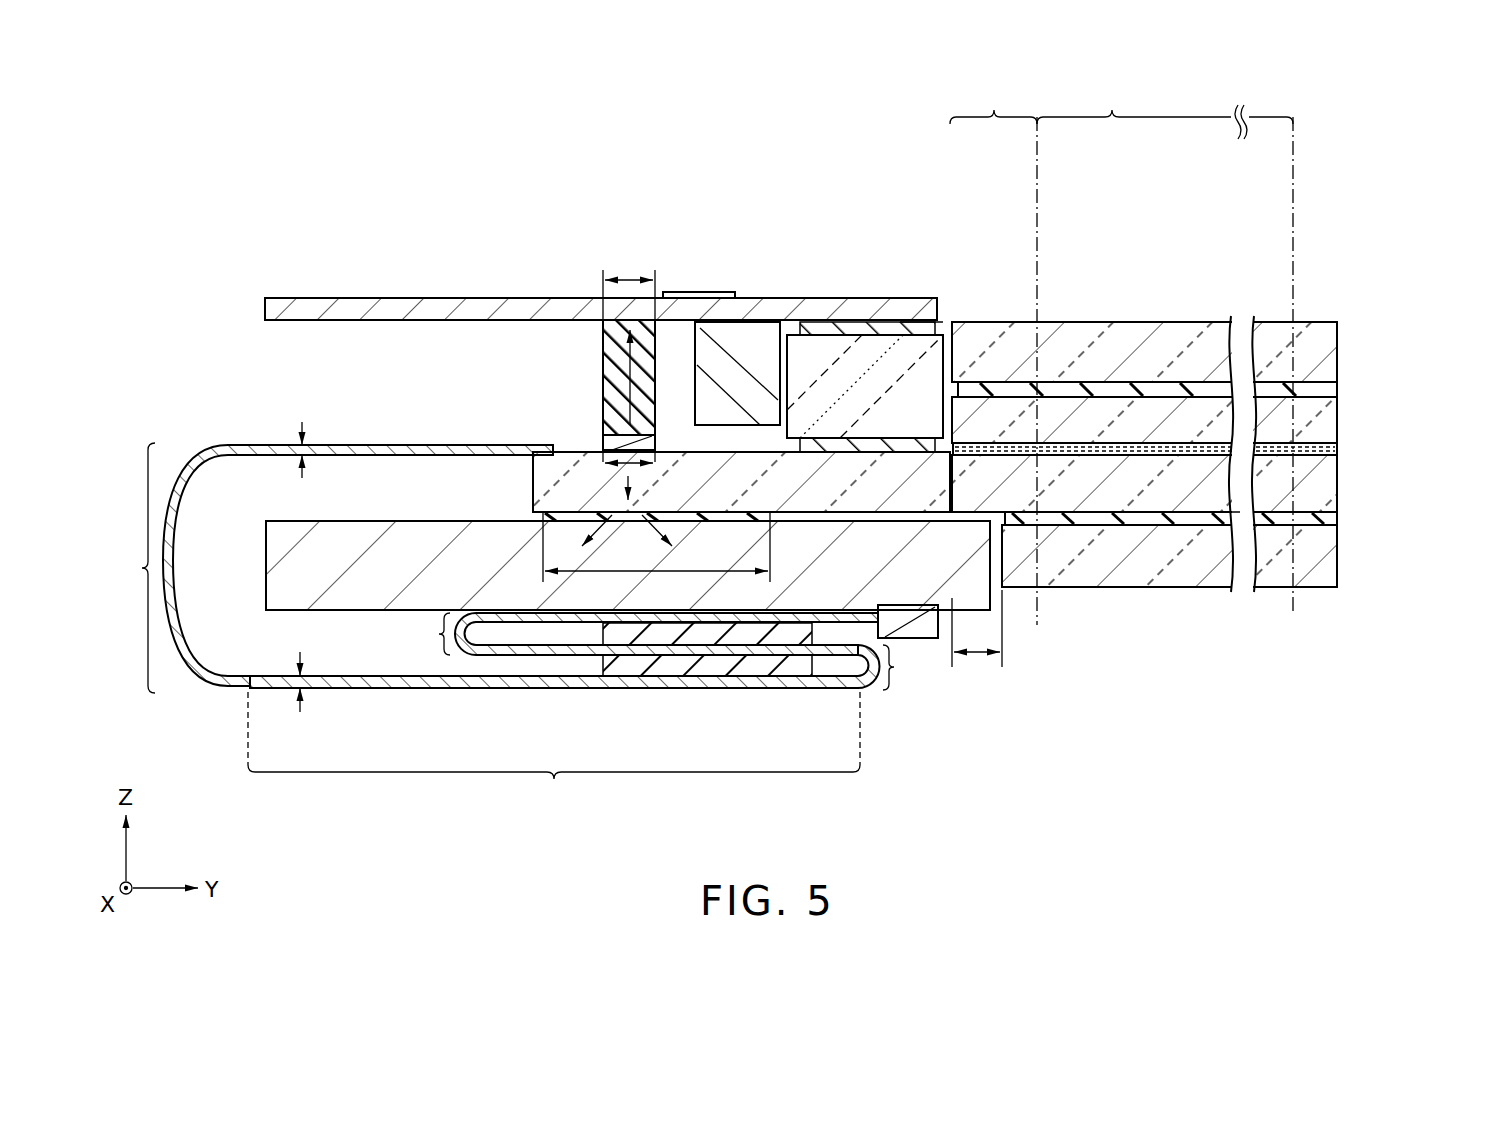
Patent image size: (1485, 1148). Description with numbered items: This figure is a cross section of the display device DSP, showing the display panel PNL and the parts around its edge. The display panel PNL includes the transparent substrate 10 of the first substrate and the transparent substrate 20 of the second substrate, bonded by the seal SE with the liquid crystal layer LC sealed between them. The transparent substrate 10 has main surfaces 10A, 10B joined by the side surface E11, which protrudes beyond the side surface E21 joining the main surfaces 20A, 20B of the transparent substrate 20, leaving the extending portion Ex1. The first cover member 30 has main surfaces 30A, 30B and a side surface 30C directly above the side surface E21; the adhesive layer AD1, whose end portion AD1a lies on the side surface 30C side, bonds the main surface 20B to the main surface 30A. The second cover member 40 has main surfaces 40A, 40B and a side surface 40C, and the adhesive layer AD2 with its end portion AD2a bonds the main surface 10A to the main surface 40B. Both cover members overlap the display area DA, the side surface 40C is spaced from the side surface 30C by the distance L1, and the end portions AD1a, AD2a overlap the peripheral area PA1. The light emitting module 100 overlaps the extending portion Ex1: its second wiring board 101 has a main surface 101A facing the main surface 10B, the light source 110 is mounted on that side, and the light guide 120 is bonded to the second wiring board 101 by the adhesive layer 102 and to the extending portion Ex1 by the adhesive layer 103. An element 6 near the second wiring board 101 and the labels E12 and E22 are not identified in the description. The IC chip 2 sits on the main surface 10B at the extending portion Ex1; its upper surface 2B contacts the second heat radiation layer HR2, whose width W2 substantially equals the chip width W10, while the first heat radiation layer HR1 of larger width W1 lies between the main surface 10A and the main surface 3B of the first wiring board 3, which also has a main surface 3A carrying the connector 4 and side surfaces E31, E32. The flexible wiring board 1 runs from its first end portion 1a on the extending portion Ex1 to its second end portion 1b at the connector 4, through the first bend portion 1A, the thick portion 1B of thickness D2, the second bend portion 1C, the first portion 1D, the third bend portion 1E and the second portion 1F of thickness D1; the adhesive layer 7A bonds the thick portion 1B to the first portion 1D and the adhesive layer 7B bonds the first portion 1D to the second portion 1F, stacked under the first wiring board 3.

The flexible wiring board 1 is at (458, 444).
The first end portion 1a is at (540, 443).
The second end portion 1b is at (862, 628).
The first bend portion 1A is at (127, 568).
The thick portion 1B is at (554, 752).
The second bend portion 1C is at (902, 667).
The first portion 1D is at (853, 648).
The third bend portion 1E is at (432, 634).
The second portion 1F is at (530, 625).
The IC chip 2 is at (625, 432).
The upper surface 2B is at (645, 430).
The first wiring board 3 is at (350, 521).
The main surface 3A is at (397, 614).
The main surface 3B is at (388, 518).
The connector 4 is at (917, 641).
The electronic component 6 is at (700, 292).
The adhesive layer 7A is at (690, 677).
The adhesive layer 7B is at (640, 647).
The transparent substrate 10 is at (1337, 503).
The main surface 10A is at (1213, 518).
The main surface 10B is at (1200, 446).
The transparent substrate 20 is at (1337, 416).
The main surface 20A is at (1283, 460).
The main surface 20B is at (1082, 384).
The first cover member 30 is at (1337, 348).
The main surface 30A is at (1170, 392).
The main surface 30B is at (1150, 320).
The side surface 30C is at (937, 328).
The second cover member 40 is at (1313, 590).
The main surface 40A is at (1153, 592).
The main surface 40B is at (1123, 520).
The side surface 40C is at (1002, 592).
The light emitting module 100 is at (776, 296).
The second wiring board 101 is at (490, 298).
The main surface 101A is at (426, 324).
The adhesive layer 102 is at (790, 335).
The adhesive layer 103 is at (800, 446).
The light source 110 is at (752, 323).
The light guide 120 is at (842, 365).
The adhesive layer AD1 is at (1337, 389).
The end portion AD1a is at (972, 380).
The adhesive layer AD2 is at (1338, 520).
The end portion AD2a is at (1008, 522).
The seal SE is at (1341, 458).
The liquid crystal layer LC is at (1073, 453).
The side surface E11 is at (530, 480).
The end of first substrate E12 is at (1342, 476).
The side surface E21 is at (940, 410).
The end of second substrate E22 is at (1342, 405).
The side surface E31 is at (264, 562).
The side surface E32 is at (992, 564).
The extending portion Ex1 is at (583, 430).
The first heat radiation layer HR1 is at (703, 515).
The second heat radiation layer HR2 is at (612, 336).
The width W1 is at (648, 572).
The width W2 is at (629, 355).
The width W10 is at (648, 468).
The thickness D1 is at (304, 443).
The thickness D2 is at (304, 669).
The distance L1 is at (980, 655).
The peripheral area PA1 is at (993, 352).
The display area DA is at (1165, 109).
The display device DSP is at (1328, 232).
The display panel PNL is at (1210, 470).